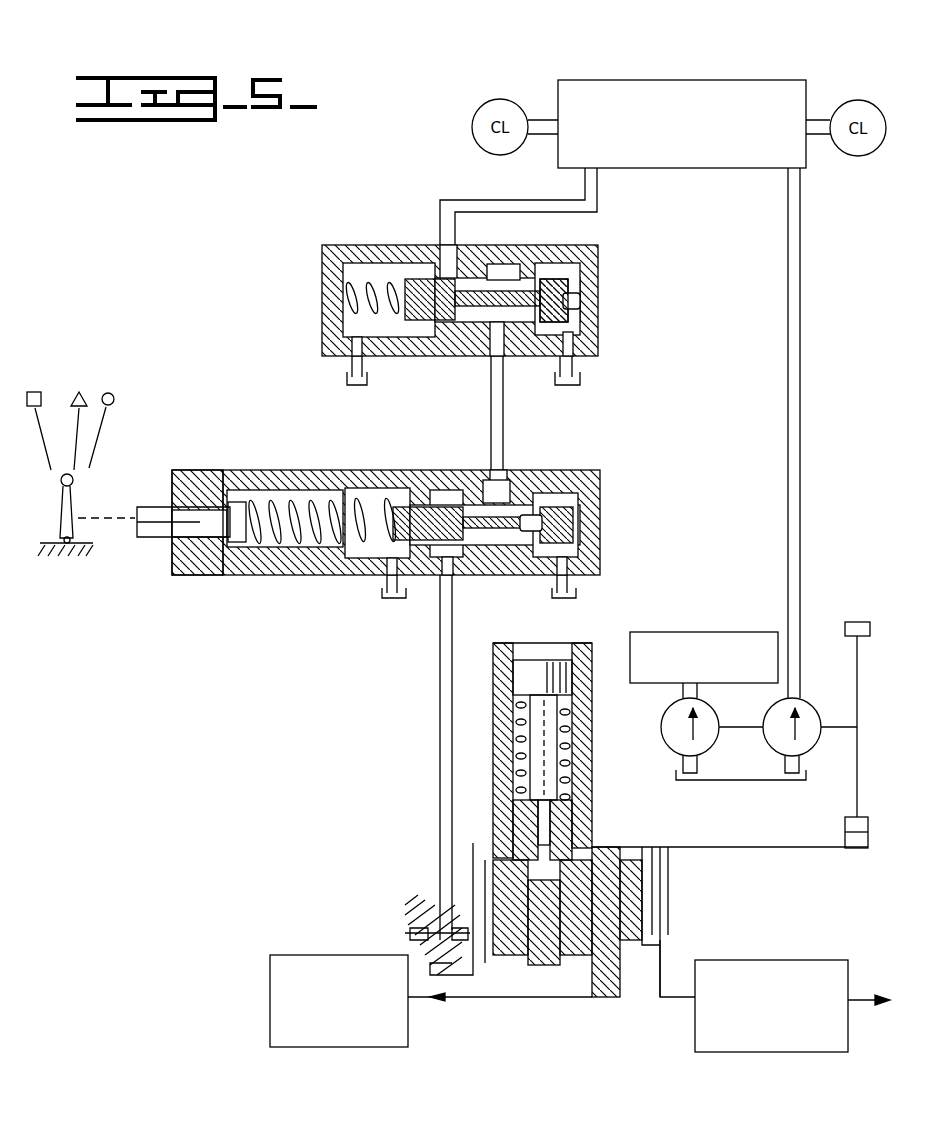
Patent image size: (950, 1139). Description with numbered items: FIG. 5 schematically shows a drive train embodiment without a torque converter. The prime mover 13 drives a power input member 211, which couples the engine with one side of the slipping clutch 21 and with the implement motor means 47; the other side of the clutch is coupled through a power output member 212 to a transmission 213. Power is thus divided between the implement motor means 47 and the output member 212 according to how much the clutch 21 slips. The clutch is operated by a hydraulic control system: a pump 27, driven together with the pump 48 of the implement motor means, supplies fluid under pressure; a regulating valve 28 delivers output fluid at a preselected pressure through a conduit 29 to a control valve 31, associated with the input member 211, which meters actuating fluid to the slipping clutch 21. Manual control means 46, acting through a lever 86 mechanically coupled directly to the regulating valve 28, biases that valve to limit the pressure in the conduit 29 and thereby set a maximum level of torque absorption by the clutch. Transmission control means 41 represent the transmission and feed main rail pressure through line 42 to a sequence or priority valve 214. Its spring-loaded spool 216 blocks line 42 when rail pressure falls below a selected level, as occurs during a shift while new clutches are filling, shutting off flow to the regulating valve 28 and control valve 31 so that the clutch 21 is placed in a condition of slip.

The transmission control means 41 is at (670, 85).
The line 42 is at (495, 200).
The sequence or priority valve 214 is at (318, 300).
The spool 216 is at (580, 298).
The regulating valve 28 is at (468, 468).
The manual control means 46 is at (243, 580).
The lever 86 is at (70, 510).
The conduit 29 is at (440, 680).
The control valve 31 is at (505, 642).
The implement motor means 47 is at (697, 630).
The pump 48 is at (672, 742).
The pump 27 is at (780, 745).
The slipping clutch 21 is at (632, 850).
The power input member 211 is at (605, 997).
The power output member 212 is at (657, 1000).
The prime mover 13 is at (323, 960).
The transmission 213 is at (778, 965).